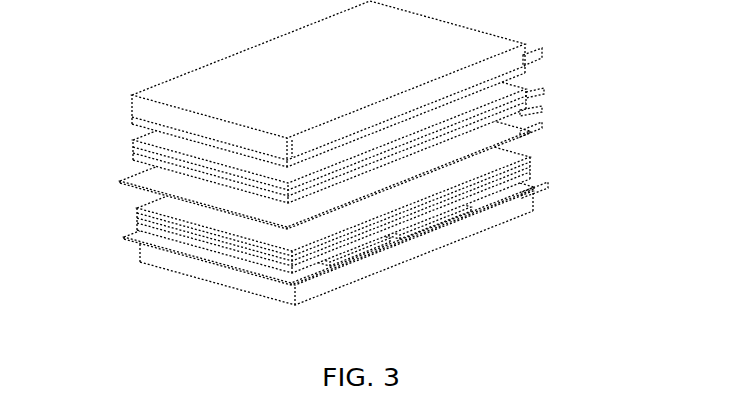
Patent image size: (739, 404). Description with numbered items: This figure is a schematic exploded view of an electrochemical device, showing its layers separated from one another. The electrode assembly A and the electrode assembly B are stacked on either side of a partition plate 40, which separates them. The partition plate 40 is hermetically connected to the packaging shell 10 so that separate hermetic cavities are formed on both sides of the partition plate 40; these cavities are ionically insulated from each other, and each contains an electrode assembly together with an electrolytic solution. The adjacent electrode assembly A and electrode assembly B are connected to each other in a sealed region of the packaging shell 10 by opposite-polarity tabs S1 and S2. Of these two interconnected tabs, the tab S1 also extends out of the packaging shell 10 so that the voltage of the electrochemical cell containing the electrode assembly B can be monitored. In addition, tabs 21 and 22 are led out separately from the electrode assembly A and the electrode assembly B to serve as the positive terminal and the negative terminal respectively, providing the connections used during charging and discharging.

The packaging shell 10 is at (475, 42).
The electrode assembly A is at (368, 124).
The tab 21 is at (510, 123).
The partition plate 40 is at (500, 128).
The electrode assembly B is at (370, 193).
The tab S2 is at (470, 180).
The tab S1 is at (457, 176).
The tab 22 is at (380, 243).